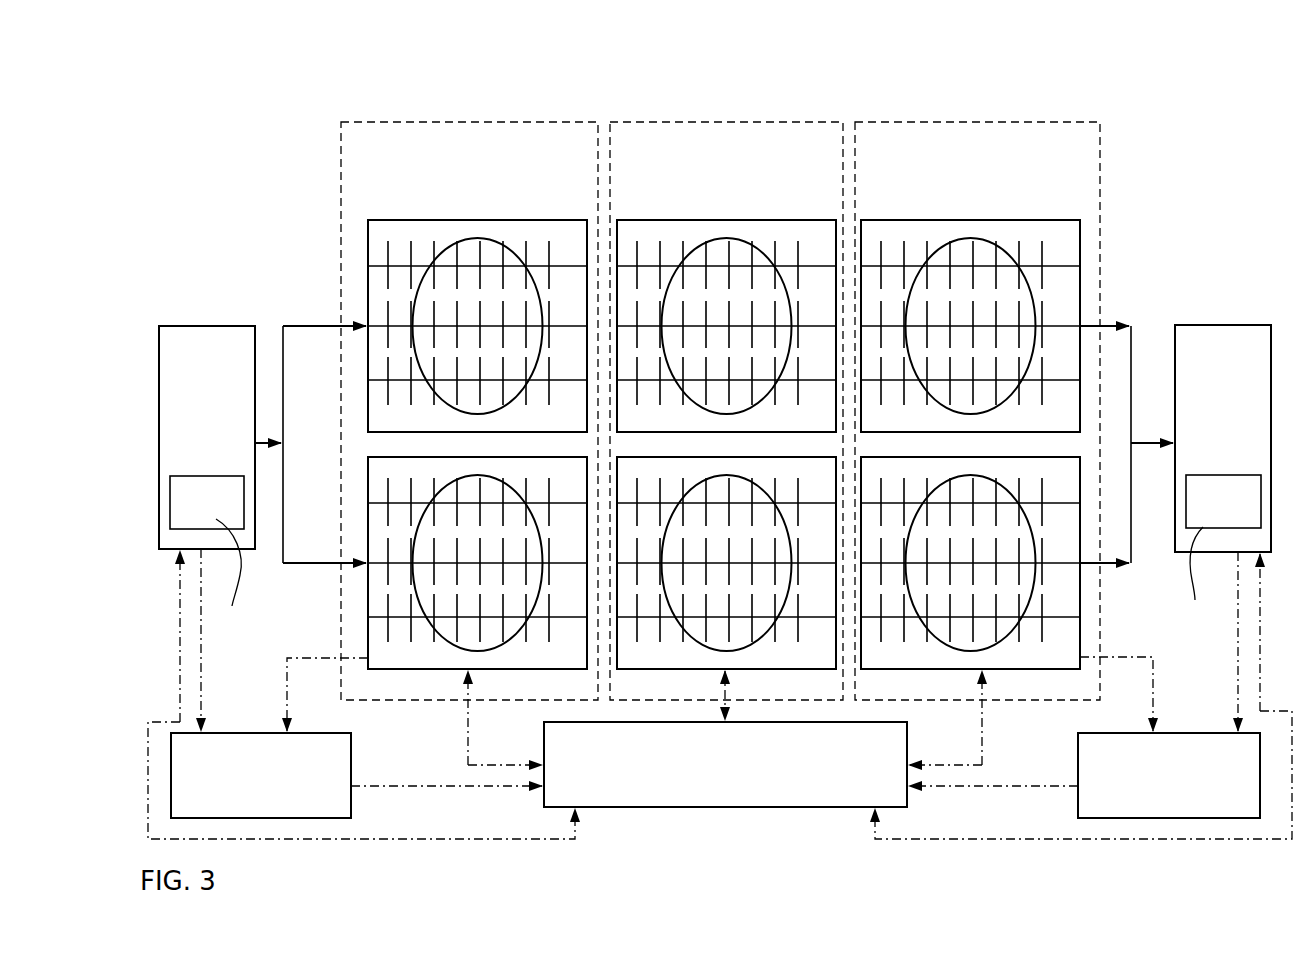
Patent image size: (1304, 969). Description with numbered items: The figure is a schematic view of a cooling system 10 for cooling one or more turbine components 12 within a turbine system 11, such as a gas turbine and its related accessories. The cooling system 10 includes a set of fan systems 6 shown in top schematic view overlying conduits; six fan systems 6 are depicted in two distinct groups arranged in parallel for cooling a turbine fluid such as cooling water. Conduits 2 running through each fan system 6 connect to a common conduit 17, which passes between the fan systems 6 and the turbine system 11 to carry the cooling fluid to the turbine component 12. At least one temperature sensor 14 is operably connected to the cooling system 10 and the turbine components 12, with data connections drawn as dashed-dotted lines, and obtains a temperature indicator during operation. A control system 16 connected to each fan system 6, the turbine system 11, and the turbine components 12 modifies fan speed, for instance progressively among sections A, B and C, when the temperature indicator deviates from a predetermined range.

The cooling system 10 is at (283, 99).
The conduits 2 is at (399, 256).
The fan systems 6 is at (724, 447).
The common conduit 17 is at (312, 325).
The turbine system 11 is at (715, 438).
The turbine component 12 is at (715, 553).
The temperature sensor 14 is at (715, 775).
The control system 16 is at (725, 764).